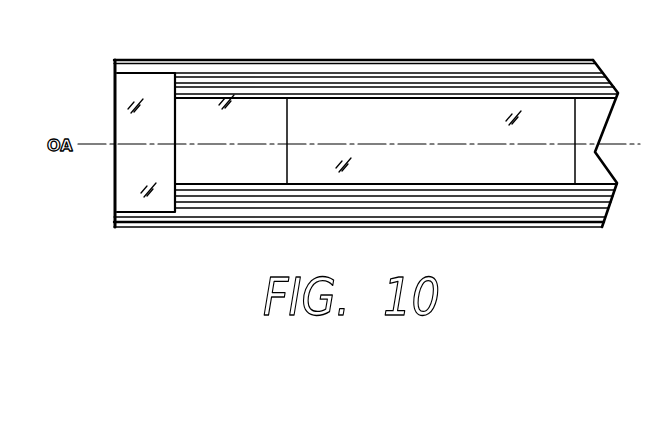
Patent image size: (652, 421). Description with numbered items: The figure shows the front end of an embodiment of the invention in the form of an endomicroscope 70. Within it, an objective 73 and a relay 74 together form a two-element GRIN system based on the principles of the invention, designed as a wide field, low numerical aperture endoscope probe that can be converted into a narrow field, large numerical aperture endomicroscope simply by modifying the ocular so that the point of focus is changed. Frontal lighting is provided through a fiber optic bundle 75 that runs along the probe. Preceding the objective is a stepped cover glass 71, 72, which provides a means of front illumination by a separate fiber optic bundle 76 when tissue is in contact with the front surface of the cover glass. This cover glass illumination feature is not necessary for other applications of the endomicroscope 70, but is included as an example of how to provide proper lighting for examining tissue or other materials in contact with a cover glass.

The endomicroscope 70 is at (241, 54).
The stepped cover glass 71 is at (130, 180).
The stepped cover glass 72 is at (254, 172).
The objective 73 is at (503, 163).
The relay 74 is at (592, 163).
The fiber optic bundle 75 is at (433, 58).
The separate fiber optic bundle 76 is at (600, 76).